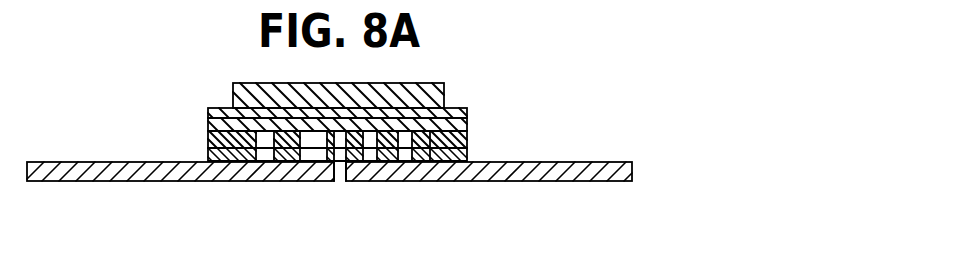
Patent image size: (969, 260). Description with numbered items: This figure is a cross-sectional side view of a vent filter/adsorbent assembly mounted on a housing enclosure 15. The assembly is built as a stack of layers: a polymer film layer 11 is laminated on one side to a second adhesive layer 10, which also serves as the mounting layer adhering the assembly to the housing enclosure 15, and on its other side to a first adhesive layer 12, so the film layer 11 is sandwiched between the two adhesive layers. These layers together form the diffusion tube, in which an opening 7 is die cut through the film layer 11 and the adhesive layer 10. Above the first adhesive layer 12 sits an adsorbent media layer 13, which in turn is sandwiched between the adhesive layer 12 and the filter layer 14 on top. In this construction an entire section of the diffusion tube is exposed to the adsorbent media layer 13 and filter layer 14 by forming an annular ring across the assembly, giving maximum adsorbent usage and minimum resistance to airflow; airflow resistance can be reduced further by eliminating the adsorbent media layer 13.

The opening 7 is at (336, 185).
The second adhesive layer 10 is at (467, 157).
The film layer 11 is at (467, 137).
The first adhesive layer 12 is at (467, 121).
The adsorbent media layer 13 is at (443, 107).
The filter layer 14 is at (438, 90).
The housing enclosure 15 is at (573, 175).